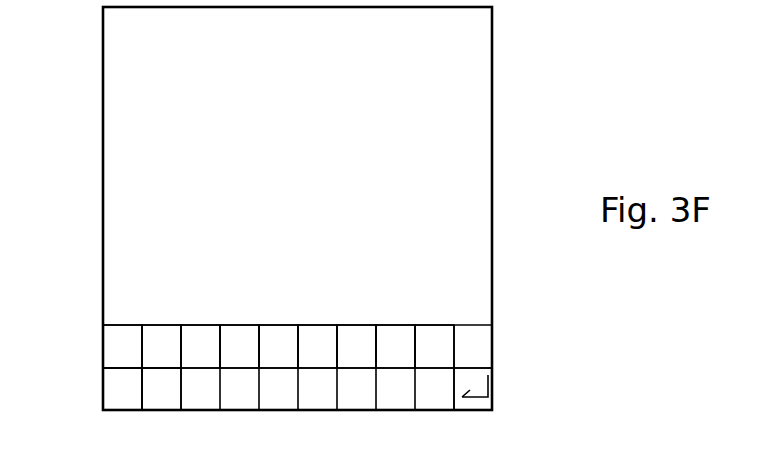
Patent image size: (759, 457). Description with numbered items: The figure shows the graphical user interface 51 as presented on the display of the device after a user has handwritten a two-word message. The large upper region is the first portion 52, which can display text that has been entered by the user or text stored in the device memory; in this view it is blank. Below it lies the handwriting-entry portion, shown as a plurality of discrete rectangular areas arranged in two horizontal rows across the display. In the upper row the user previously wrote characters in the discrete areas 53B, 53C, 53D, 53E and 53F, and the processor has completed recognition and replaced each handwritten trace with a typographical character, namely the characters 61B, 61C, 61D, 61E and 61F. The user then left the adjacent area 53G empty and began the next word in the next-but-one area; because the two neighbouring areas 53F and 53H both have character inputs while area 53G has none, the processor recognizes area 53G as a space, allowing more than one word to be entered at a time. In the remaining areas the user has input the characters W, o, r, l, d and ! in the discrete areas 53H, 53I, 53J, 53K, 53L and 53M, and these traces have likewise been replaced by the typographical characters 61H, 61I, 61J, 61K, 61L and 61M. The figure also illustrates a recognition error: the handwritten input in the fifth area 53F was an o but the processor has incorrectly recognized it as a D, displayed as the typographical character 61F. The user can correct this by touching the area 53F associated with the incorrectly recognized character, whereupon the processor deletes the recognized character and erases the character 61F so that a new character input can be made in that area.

The graphical user interface 51 is at (493, 208).
The first portion 52 is at (475, 99).
The discrete area 53B is at (123, 326).
The discrete area 53C is at (147, 327).
The discrete area 53D is at (186, 338).
The discrete area 53E is at (250, 333).
The discrete area 53F is at (272, 335).
The discrete area 53G is at (322, 330).
The discrete area 53H is at (352, 363).
The discrete area 53I is at (408, 363).
The discrete area 53J is at (445, 360).
The discrete area 53K is at (488, 370).
The discrete area 53L is at (108, 400).
The discrete area 53M is at (170, 398).
The typographical character 61B is at (112, 355).
The typographical character 61C is at (158, 337).
The typographical character 61D is at (202, 360).
The typographical character 61E is at (242, 360).
The typographical character 61F is at (285, 353).
The typographical character 61H is at (362, 335).
The typographical character 61I is at (397, 337).
The typographical character 61J is at (438, 340).
The typographical character 61K is at (477, 336).
The typographical character 61L is at (112, 393).
The typographical character 61M is at (157, 386).